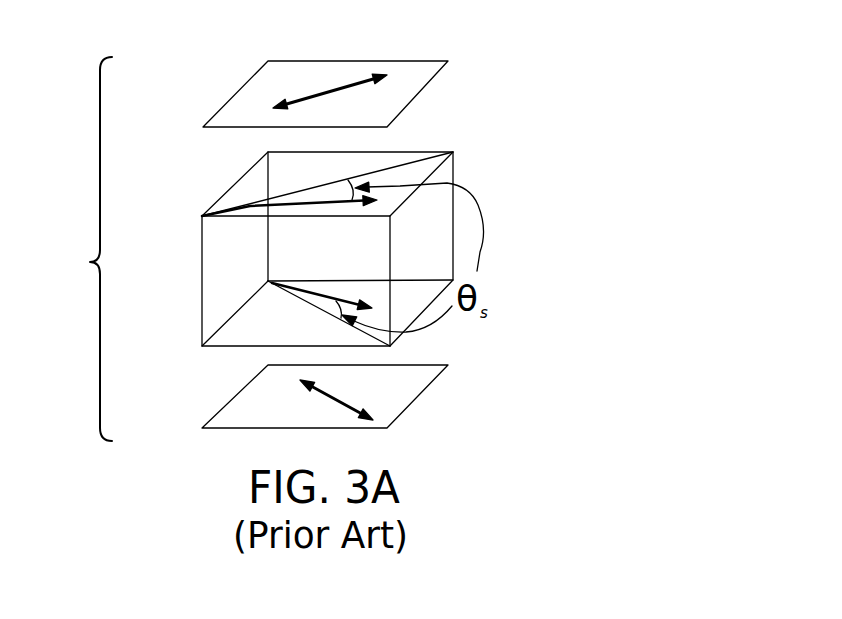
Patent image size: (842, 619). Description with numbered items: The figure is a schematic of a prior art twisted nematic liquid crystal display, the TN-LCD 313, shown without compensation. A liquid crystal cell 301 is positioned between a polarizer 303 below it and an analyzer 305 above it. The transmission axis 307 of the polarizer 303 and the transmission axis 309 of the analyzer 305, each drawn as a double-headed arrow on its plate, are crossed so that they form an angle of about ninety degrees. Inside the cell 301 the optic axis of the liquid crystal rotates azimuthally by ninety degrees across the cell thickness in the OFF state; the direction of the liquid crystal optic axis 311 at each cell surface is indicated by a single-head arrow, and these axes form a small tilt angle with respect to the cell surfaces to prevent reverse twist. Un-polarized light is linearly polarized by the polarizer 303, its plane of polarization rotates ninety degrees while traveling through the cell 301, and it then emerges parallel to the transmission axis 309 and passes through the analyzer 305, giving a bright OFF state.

The liquid crystal cell 301 is at (201, 272).
The polarizer 303 is at (447, 365).
The analyzer 305 is at (418, 60).
The transmission axis of polarizer 307 is at (334, 397).
The transmission axis of analyzer 309 is at (319, 96).
The liquid crystal optic axis 311 is at (312, 203).
The TN-LCD 313 is at (82, 249).